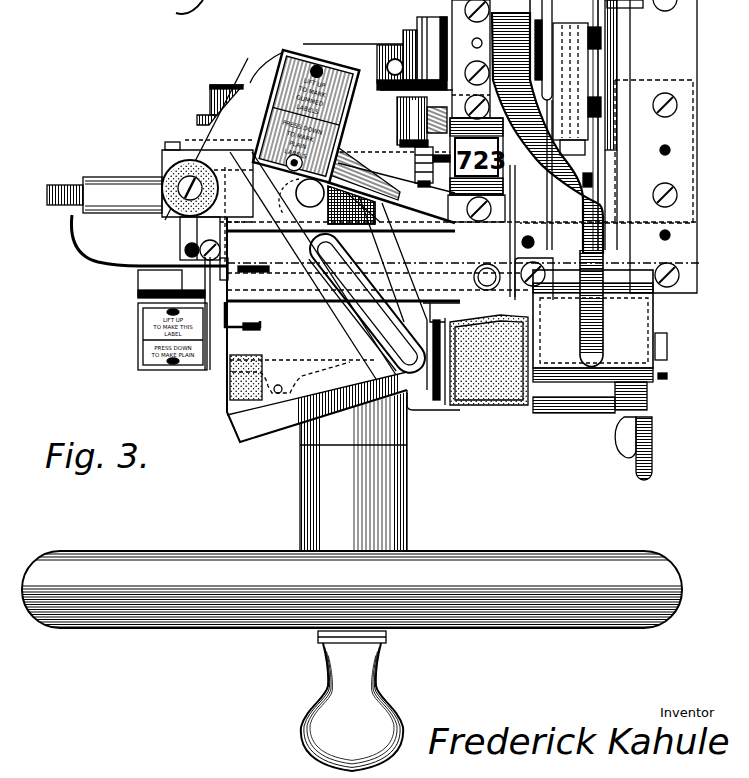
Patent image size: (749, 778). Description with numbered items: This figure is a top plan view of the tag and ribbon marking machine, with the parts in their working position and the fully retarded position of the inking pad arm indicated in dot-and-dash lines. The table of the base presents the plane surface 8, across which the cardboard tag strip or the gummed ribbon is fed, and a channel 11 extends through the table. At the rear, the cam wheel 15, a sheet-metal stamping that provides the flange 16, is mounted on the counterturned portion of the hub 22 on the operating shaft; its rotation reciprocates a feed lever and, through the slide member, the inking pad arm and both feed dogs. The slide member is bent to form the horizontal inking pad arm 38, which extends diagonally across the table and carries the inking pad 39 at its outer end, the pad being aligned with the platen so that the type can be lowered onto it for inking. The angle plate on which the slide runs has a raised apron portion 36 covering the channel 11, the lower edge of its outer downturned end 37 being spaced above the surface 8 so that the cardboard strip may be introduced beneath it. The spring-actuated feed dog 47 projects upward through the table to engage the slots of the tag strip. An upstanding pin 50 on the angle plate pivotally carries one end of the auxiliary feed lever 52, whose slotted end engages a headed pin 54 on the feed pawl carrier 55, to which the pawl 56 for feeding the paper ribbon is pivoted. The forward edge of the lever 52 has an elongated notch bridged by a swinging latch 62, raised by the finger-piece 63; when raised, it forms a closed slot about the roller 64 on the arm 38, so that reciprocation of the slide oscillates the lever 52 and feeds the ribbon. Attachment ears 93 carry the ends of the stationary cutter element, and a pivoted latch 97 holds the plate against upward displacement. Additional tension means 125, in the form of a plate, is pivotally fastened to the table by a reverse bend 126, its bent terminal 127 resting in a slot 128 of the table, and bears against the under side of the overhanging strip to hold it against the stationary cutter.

The plane surface 8 is at (343, 329).
The channel 11 is at (462, 230).
The cam wheel 15 is at (233, 84).
The flange 16 is at (199, 115).
The hub 22 is at (347, 50).
The raised apron portion 36 is at (465, 277).
The outer downturned end 37 is at (444, 312).
The inking pad arm 38 is at (355, 323).
The inking pad 39 is at (493, 405).
The feed dog 47 is at (533, 308).
The upstanding pin 50 is at (176, 208).
The auxiliary feed lever 52 is at (207, 190).
The headed pin 54 is at (553, 113).
The feed pawl carrier 55 is at (582, 77).
The pawl 56 is at (598, 150).
The swinging latch 62 is at (353, 162).
The finger-piece 63 is at (395, 142).
The roller 64 is at (273, 203).
The attachment ears 93 is at (515, 265).
The pivoted latch 97 is at (638, 7).
The tension means 125 is at (244, 258).
The reverse bend 126 is at (226, 311).
The bent terminal 127 is at (270, 317).
The slot 128 is at (247, 368).